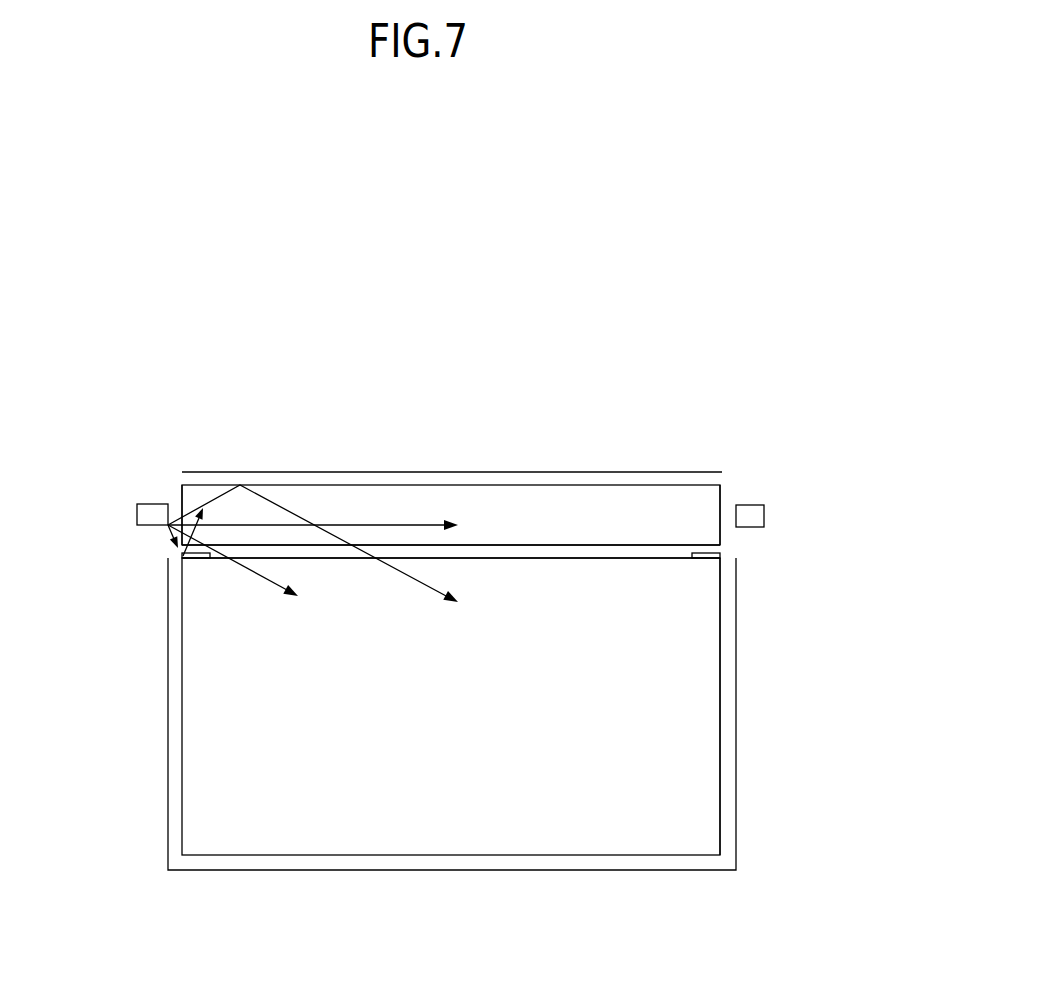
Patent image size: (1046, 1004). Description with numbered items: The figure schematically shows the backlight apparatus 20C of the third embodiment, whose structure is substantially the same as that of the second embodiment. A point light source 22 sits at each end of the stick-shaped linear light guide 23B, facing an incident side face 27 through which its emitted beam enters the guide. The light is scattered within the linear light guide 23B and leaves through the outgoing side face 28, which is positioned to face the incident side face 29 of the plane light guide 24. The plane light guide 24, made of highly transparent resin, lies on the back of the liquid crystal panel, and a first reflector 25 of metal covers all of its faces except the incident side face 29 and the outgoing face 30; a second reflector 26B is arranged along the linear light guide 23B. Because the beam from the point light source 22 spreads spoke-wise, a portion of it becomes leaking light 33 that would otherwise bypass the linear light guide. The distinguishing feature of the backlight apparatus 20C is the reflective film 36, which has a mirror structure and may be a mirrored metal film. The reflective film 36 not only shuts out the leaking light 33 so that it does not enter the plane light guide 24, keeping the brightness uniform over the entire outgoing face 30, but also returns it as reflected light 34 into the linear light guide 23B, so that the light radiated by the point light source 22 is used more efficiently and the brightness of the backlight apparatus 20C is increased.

The backlight apparatus 20C is at (465, 311).
The point light source 22 is at (137, 517).
The linear light guide 23B is at (541, 506).
The plane light guide 24 is at (565, 838).
The first reflector 25 is at (752, 786).
The second reflector 26B is at (415, 471).
The incident side face 27 is at (181, 497).
The outgoing side face 28 is at (665, 546).
The incident side face 29 is at (587, 554).
The outgoing face 30 is at (708, 688).
The leaking light 33 is at (170, 532).
The reflected light 34 is at (205, 527).
The reflective film 36 is at (705, 553).